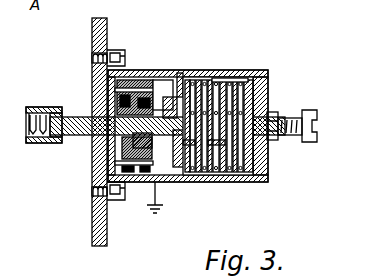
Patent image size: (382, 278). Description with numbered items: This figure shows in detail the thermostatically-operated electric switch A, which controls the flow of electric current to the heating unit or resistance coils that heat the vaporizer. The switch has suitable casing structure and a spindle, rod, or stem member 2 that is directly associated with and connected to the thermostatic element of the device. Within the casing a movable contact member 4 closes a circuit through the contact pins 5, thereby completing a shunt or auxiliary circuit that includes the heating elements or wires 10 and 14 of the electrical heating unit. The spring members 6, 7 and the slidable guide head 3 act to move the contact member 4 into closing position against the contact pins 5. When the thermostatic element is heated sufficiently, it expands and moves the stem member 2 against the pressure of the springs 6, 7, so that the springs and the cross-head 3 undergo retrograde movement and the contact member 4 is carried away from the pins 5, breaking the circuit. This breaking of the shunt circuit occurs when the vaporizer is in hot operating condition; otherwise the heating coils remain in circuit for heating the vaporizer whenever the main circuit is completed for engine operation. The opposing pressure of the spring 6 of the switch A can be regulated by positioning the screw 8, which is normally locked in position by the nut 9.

The spindle, rod, or stem member 2 is at (77, 138).
The slidable guide head 3 is at (183, 72).
The movable contact member 4 is at (157, 72).
The contact pins 5 is at (133, 80).
The spring member 6 is at (208, 175).
The spring member 7 is at (232, 170).
The screw 8 is at (297, 142).
The nut 9 is at (278, 143).
The heating element or wire 10 is at (168, 180).
The heating element or wire 14 is at (145, 66).
The thermostatic electric switch A is at (270, 86).